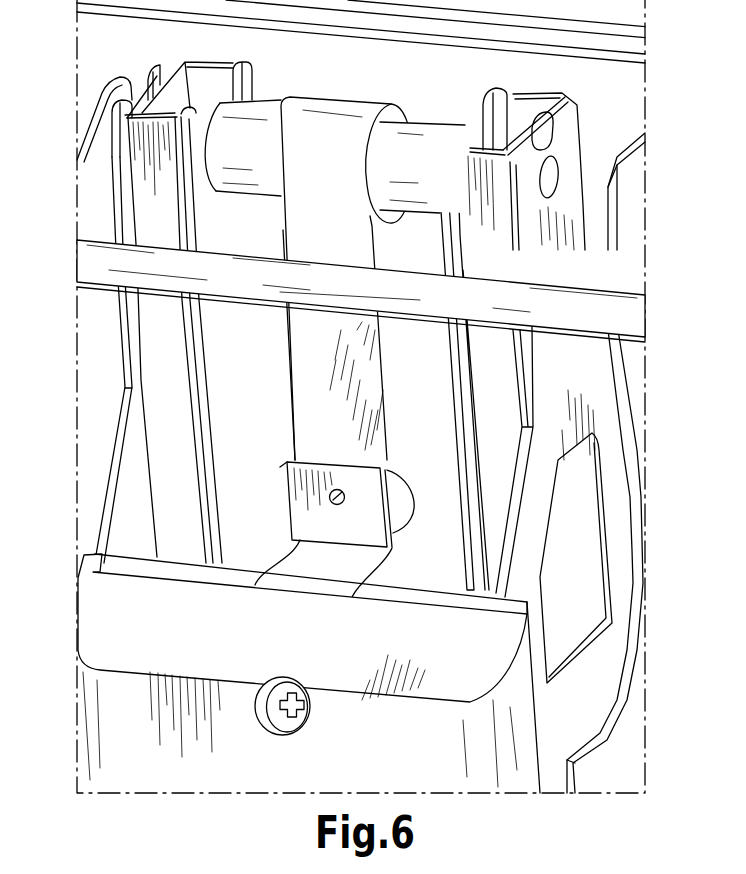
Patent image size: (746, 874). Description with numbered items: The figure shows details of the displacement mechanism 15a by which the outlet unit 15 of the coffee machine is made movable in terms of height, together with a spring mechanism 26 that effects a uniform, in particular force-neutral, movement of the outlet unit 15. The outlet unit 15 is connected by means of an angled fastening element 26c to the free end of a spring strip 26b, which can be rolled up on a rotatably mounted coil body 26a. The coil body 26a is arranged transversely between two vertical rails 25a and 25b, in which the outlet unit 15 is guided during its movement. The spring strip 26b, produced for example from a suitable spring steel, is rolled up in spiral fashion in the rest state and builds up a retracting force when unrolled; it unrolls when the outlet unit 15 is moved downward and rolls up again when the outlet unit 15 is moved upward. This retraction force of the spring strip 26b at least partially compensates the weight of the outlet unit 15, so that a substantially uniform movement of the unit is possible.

The outlet unit 15 is at (137, 727).
The displacement mechanism 15a is at (592, 390).
The vertical rail 25a is at (170, 86).
The vertical rail 25b is at (501, 104).
The spring mechanism 26 is at (353, 83).
The coil body 26a is at (221, 160).
The spring strip 26b is at (318, 383).
The angled fastening element 26c is at (330, 548).